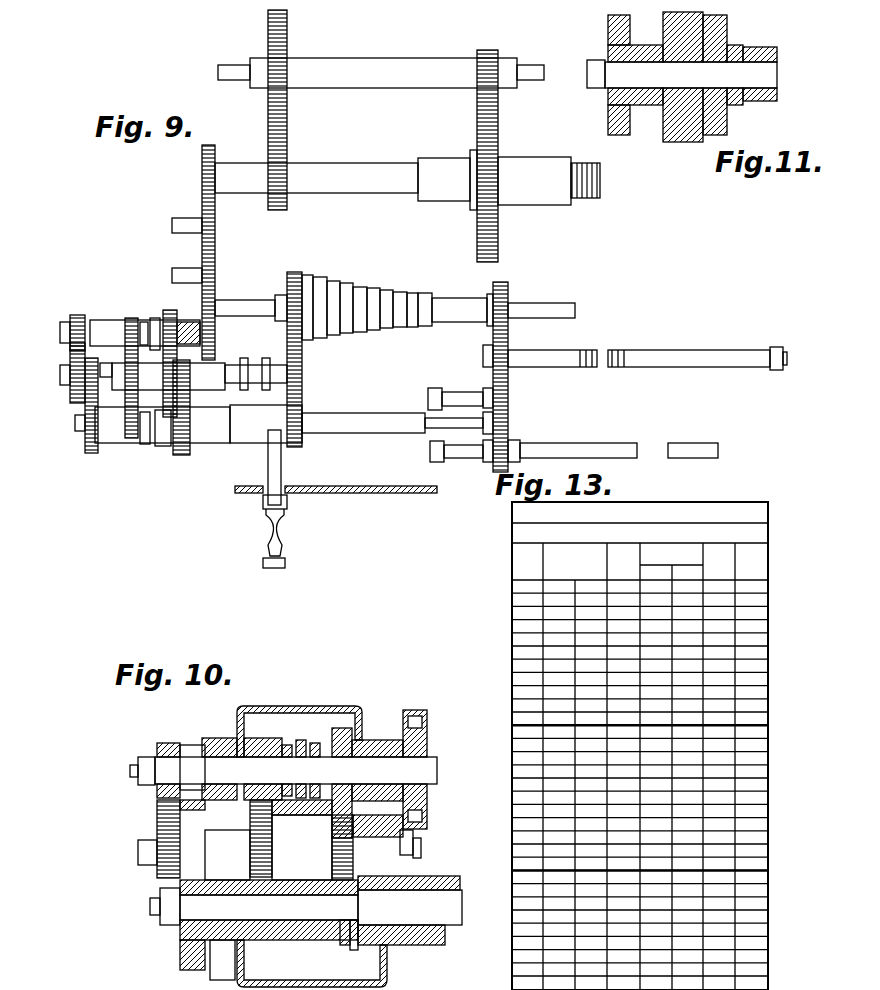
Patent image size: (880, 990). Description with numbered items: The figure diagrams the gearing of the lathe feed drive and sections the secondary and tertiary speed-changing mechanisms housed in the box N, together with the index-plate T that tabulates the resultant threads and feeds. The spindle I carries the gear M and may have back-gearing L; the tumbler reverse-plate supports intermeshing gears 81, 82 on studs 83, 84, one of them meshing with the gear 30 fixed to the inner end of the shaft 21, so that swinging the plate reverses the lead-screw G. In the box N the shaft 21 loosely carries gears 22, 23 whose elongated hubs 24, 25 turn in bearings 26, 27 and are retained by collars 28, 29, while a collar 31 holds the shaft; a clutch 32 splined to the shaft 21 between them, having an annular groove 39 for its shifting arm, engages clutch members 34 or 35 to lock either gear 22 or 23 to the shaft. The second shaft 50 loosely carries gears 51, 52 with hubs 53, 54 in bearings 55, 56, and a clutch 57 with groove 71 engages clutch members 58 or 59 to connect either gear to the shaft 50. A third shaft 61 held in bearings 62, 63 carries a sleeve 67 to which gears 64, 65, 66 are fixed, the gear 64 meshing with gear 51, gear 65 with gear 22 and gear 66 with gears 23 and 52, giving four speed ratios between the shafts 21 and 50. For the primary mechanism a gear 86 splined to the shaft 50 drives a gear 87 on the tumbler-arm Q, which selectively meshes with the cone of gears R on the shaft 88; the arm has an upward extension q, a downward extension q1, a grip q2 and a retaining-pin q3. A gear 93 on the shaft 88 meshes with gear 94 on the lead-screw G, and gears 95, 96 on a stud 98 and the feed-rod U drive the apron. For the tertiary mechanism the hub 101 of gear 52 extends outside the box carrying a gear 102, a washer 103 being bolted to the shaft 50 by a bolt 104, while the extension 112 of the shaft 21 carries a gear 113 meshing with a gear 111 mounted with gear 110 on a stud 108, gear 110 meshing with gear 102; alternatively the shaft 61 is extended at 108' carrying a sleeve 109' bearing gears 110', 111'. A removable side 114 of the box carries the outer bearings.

In FIG. 9, the back-gearing L is at (483, 55).
In FIG. 9, the spindle I is at (390, 172).
In FIG. 9, the gear on the spindle M is at (200, 168).
In FIG. 9, the stud 84 is at (182, 222).
In FIG. 9, the gear 82 is at (215, 228).
In FIG. 9, the stud 83 is at (185, 260).
In FIG. 9, the gear 81 is at (215, 282).
In FIG. 9, the gear 113 is at (82, 315).
In FIG. 10, the gear 113 is at (160, 745).
In FIG. 9, the stud 108 is at (91, 286).
In FIG. 9, the collar 31 is at (103, 325).
In FIG. 10, the collar 31 is at (192, 760).
In FIG. 9, the gear 111 is at (62, 373).
In FIG. 9, the bolt 104 is at (78, 418).
In FIG. 10, the bolt 104 is at (162, 920).
In FIG. 9, the elongated hub 25 is at (145, 333).
In FIG. 10, the elongated hub 25 is at (215, 738).
In FIG. 9, the gear 23 is at (130, 317).
In FIG. 10, the gear 23 is at (268, 738).
In FIG. 9, the clutch 32 is at (152, 316).
In FIG. 10, the clutch 32 is at (302, 740).
In FIG. 9, the clutch members 35 is at (143, 322).
In FIG. 10, the clutch members 35 is at (284, 756).
In FIG. 9, the clutch members 34 is at (156, 318).
In FIG. 10, the clutch members 34 is at (322, 742).
In FIG. 9, the gear 22 is at (172, 312).
In FIG. 10, the gear 22 is at (346, 728).
In FIG. 9, the gear 110 is at (114, 362).
In FIG. 10, the gear 110 is at (201, 805).
In FIG. 9, the elongated hub 24 is at (188, 333).
In FIG. 10, the elongated hub 24 is at (377, 740).
In FIG. 9, the shaft 21 is at (208, 336).
In FIG. 10, the shaft 21 is at (432, 770).
In FIG. 9, the gear 30 is at (220, 348).
In FIG. 10, the gear 30 is at (425, 712).
In FIG. 9, the gear 66 is at (125, 385).
In FIG. 11, the gear 66 is at (735, 38).
In FIG. 10, the gear 66 is at (302, 847).
In FIG. 9, the gear 51 is at (188, 414).
In FIG. 9, the gear 64 is at (200, 366).
In FIG. 10, the gear 64 is at (378, 818).
In FIG. 9, the third shaft 61 is at (214, 378).
In FIG. 11, the third shaft 61 is at (768, 78).
In FIG. 10, the third shaft 61 is at (421, 850).
In FIG. 9, the gear 65 is at (230, 390).
In FIG. 10, the gear 65 is at (335, 847).
In FIG. 9, the washer 103 is at (88, 428).
In FIG. 10, the washer 103 is at (160, 908).
In FIG. 9, the gear 102 is at (95, 450).
In FIG. 10, the gear 102 is at (192, 972).
In FIG. 9, the elongated hub 54 is at (112, 440).
In FIG. 10, the elongated hub 54 is at (269, 907).
In FIG. 9, the gear 52 is at (130, 437).
In FIG. 10, the gear 52 is at (275, 942).
In FIG. 9, the clutch 57 is at (158, 440).
In FIG. 10, the clutch 57 is at (340, 937).
In FIG. 9, the clutch members 59 is at (140, 445).
In FIG. 10, the clutch members 59 is at (300, 942).
In FIG. 9, the clutch members 58 is at (182, 456).
In FIG. 10, the clutch members 58 is at (354, 948).
In FIG. 9, the elongated hub 53 is at (189, 439).
In FIG. 10, the elongated hub 53 is at (410, 907).
In FIG. 9, the second shaft 50 is at (363, 425).
In FIG. 10, the second shaft 50 is at (462, 908).
In FIG. 9, the gear 87 is at (302, 367).
In FIG. 9, the cone of gears R is at (358, 285).
In FIG. 9, the shaft 88 is at (450, 310).
In FIG. 9, the gear 93 is at (510, 283).
In FIG. 9, the gear 94 is at (508, 343).
In FIG. 9, the gear 95 is at (508, 390).
In FIG. 9, the gear 96 is at (512, 435).
In FIG. 9, the stud 98 is at (456, 393).
In FIG. 9, the lead-screw G is at (615, 352).
In FIG. 9, the feed-rod U is at (572, 447).
In FIG. 9, the gear 86 is at (302, 435).
In FIG. 9, the tumbler-arm Q is at (278, 438).
In FIG. 9, the upward extension q is at (265, 501).
In FIG. 9, the downward extension q1 is at (254, 490).
In FIG. 9, the grip q2 is at (283, 532).
In FIG. 9, the retaining-pin q3 is at (283, 566).
In FIG. 11, the extension of shaft 61 108' is at (611, 75).
In FIG. 11, the sleeve 109' is at (635, 77).
In FIG. 11, the sleeve 67 is at (752, 103).
In FIG. 10, the sleeve 67 is at (308, 835).
In FIG. 11, the gear 111' is at (623, 144).
In FIG. 10, the gear 111' is at (146, 839).
In FIG. 11, the gear 110' is at (649, 136).
In FIG. 11, the frame or box N is at (672, 138).
In FIG. 10, the frame or box N is at (316, 705).
In FIG. 10, the removable side 114 is at (299, 710).
In FIG. 10, the extension of shaft 21 112 is at (150, 764).
In FIG. 10, the collar 29 is at (205, 740).
In FIG. 10, the bearing 27 is at (230, 738).
In FIG. 10, the bearing 26 is at (395, 740).
In FIG. 10, the collar 28 is at (428, 805).
In FIG. 10, the bearing 62 is at (413, 836).
In FIG. 10, the bearing 63 is at (232, 842).
In FIG. 10, the annular groove 39 is at (302, 807).
In FIG. 10, the bearing 55 is at (420, 945).
In FIG. 10, the extended hub 101 is at (185, 940).
In FIG. 10, the bearing 56 is at (224, 952).
In FIG. 10, the annular groove 71 is at (322, 945).
In FIG. 13, the index-plate T is at (762, 552).